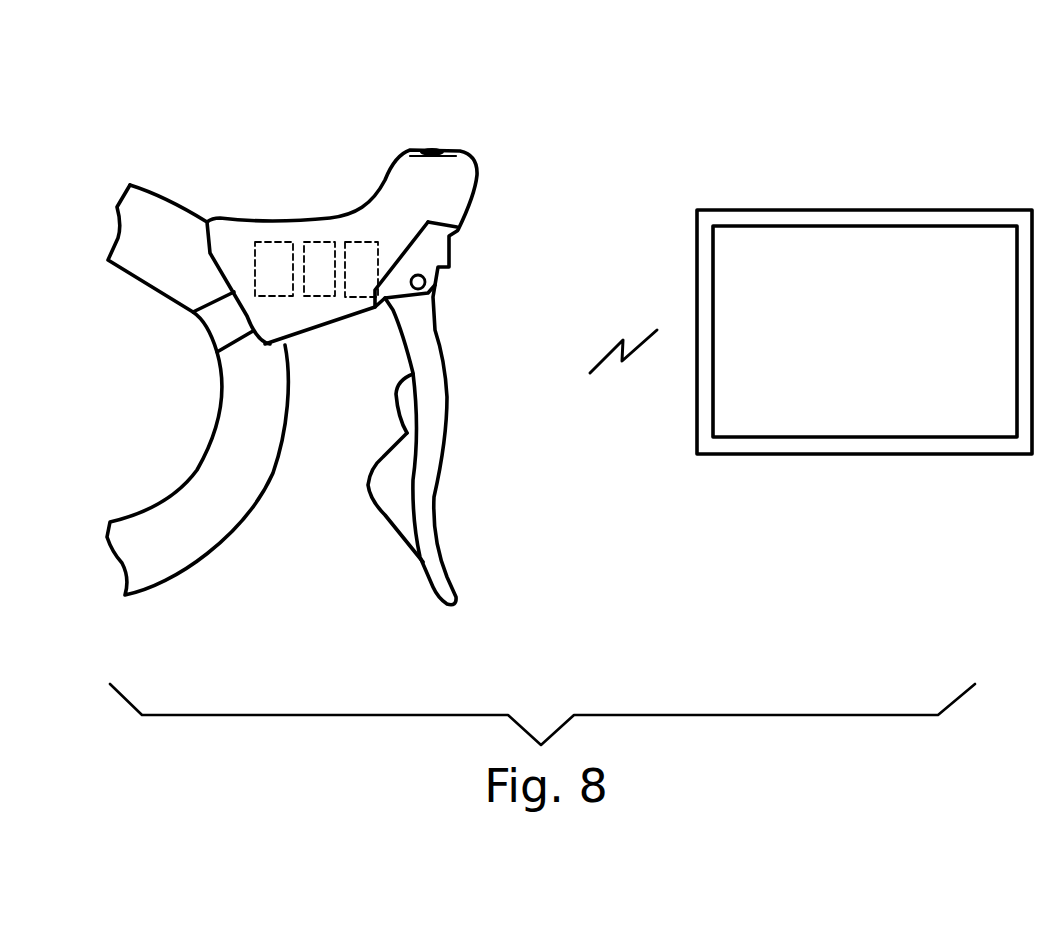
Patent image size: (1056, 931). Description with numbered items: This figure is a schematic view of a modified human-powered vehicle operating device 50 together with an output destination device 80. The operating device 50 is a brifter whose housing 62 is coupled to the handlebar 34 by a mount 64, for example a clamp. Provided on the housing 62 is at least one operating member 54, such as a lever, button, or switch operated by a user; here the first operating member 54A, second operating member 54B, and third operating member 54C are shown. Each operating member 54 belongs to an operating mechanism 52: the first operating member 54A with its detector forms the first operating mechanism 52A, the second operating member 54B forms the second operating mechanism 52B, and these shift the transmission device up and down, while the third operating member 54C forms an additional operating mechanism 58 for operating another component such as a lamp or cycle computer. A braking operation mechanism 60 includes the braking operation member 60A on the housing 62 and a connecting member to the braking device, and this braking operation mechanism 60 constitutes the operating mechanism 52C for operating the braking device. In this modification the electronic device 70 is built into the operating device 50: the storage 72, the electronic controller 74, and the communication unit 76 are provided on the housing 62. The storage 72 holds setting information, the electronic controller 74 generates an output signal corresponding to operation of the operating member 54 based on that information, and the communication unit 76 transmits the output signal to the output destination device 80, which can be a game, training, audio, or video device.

The handlebar 34 is at (168, 207).
The human-powered vehicle operating device 50 is at (458, 188).
The operating mechanism 52 is at (452, 450).
The first operating mechanism 52A is at (338, 420).
The second operating mechanism 52B is at (383, 618).
The operating mechanism for operating the braking device 52C is at (520, 450).
The operating member 54 is at (418, 340).
The first operating member 54A is at (402, 382).
The second operating member 54B is at (377, 502).
The third operating member 54C is at (432, 147).
The additional operating mechanism 58 is at (478, 55).
The braking operation mechanism 60 is at (492, 376).
The braking operation member 60A is at (423, 343).
The housing 62 is at (287, 232).
The mount 64 is at (203, 330).
The electronic device 70 is at (278, 323).
The storage 72 is at (270, 240).
The electronic controller 74 is at (318, 240).
The communication unit 76 is at (355, 240).
The output destination device 80 is at (970, 210).